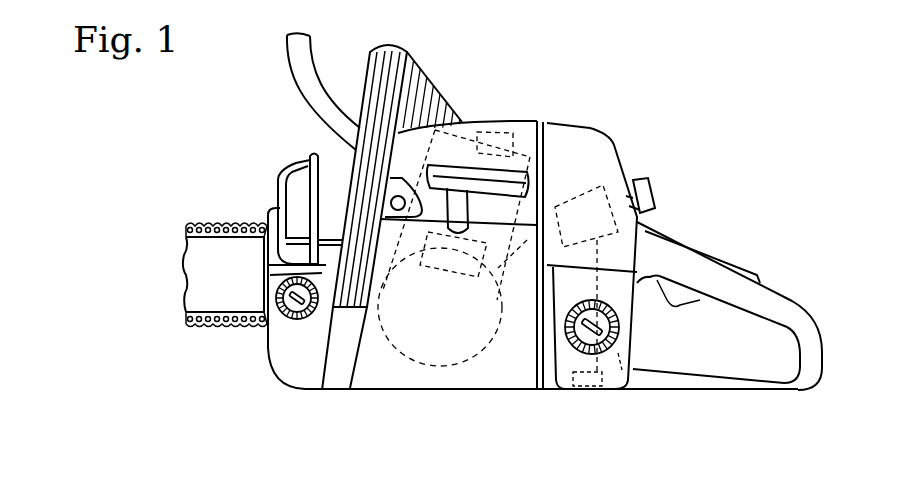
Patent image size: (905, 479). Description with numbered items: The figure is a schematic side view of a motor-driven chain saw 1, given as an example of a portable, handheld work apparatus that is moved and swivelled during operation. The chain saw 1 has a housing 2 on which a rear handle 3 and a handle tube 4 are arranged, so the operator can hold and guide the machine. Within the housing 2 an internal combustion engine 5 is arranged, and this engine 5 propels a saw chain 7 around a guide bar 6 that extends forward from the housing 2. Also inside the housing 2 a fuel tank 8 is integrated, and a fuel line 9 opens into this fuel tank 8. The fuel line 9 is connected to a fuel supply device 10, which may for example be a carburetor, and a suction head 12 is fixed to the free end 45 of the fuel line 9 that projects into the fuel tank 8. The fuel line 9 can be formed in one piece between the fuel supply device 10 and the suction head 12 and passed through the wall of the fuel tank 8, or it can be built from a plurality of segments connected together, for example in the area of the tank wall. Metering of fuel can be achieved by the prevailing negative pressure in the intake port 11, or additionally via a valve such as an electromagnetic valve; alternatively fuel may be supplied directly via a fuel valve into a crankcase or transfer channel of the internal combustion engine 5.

The chain saw 1 is at (748, 112).
The housing 2 is at (380, 375).
The rear handle 3 is at (767, 300).
The handle tube 4 is at (427, 88).
The internal combustion engine 5 is at (447, 327).
The guide bar 6 is at (228, 253).
The saw chain 7 is at (202, 228).
The fuel tank 8 is at (563, 375).
The fuel line 9 is at (595, 288).
The fuel supply device 10 is at (597, 197).
The intake port 11 is at (530, 233).
The suction head 12 is at (597, 390).
The free end 45 is at (608, 378).